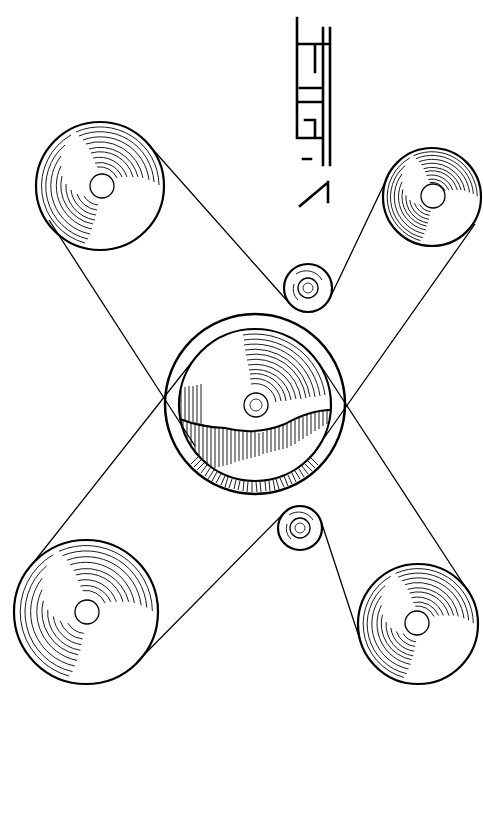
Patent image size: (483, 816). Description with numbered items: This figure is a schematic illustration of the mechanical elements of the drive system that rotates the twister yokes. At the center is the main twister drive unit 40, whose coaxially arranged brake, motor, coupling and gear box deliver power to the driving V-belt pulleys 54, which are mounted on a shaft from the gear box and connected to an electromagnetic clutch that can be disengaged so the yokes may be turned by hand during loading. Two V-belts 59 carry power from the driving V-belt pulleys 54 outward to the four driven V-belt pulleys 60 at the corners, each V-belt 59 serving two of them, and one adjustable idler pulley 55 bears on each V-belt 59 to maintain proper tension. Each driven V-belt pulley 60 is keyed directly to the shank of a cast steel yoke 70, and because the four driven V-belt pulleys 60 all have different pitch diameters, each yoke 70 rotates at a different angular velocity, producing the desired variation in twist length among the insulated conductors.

The main twister drive unit 40 is at (336, 467).
The driving V-belt pulley 54 is at (188, 350).
The adjustable idler pulley 55 is at (295, 267).
The V-belt 59 is at (408, 315).
The driven V-belt pulley 60 is at (100, 122).
The yoke 70 is at (16, 408).